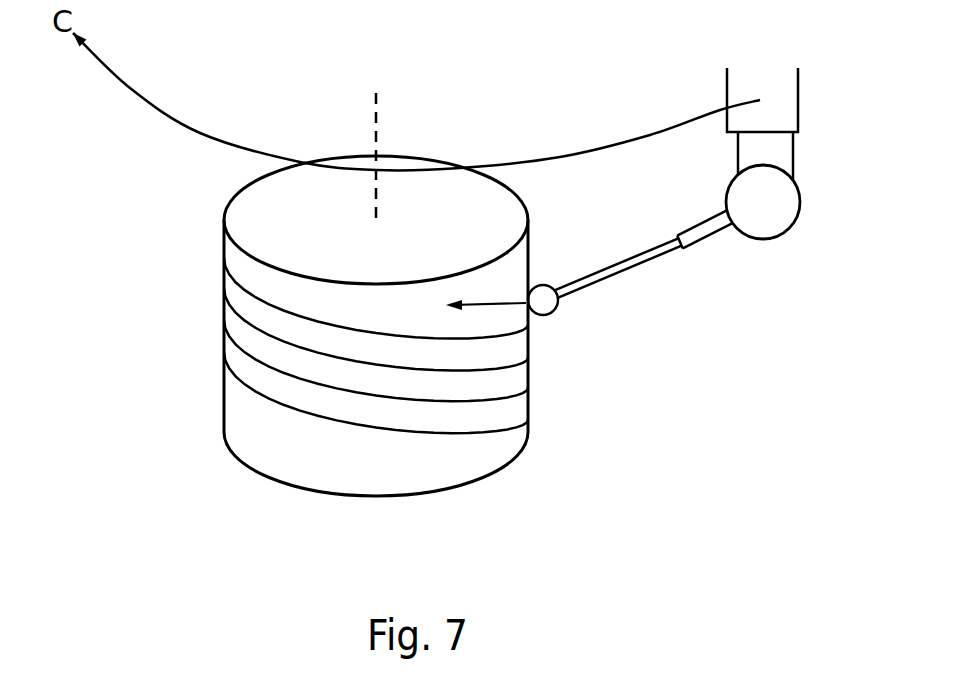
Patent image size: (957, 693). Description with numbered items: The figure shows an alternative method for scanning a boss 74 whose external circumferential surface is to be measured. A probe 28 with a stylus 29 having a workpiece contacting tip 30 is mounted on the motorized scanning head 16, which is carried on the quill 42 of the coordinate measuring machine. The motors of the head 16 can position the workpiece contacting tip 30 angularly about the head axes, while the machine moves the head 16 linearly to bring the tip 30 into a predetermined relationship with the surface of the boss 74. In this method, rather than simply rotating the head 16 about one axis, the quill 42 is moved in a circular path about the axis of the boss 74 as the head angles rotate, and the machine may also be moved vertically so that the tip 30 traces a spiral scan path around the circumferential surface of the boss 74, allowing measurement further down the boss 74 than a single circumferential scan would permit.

The boss 74 is at (365, 498).
The workpiece contacting tip 30 is at (548, 315).
The stylus 29 is at (630, 262).
The probe 28 is at (702, 230).
The motorized scanning head 16 is at (789, 205).
The quill 42 is at (783, 112).